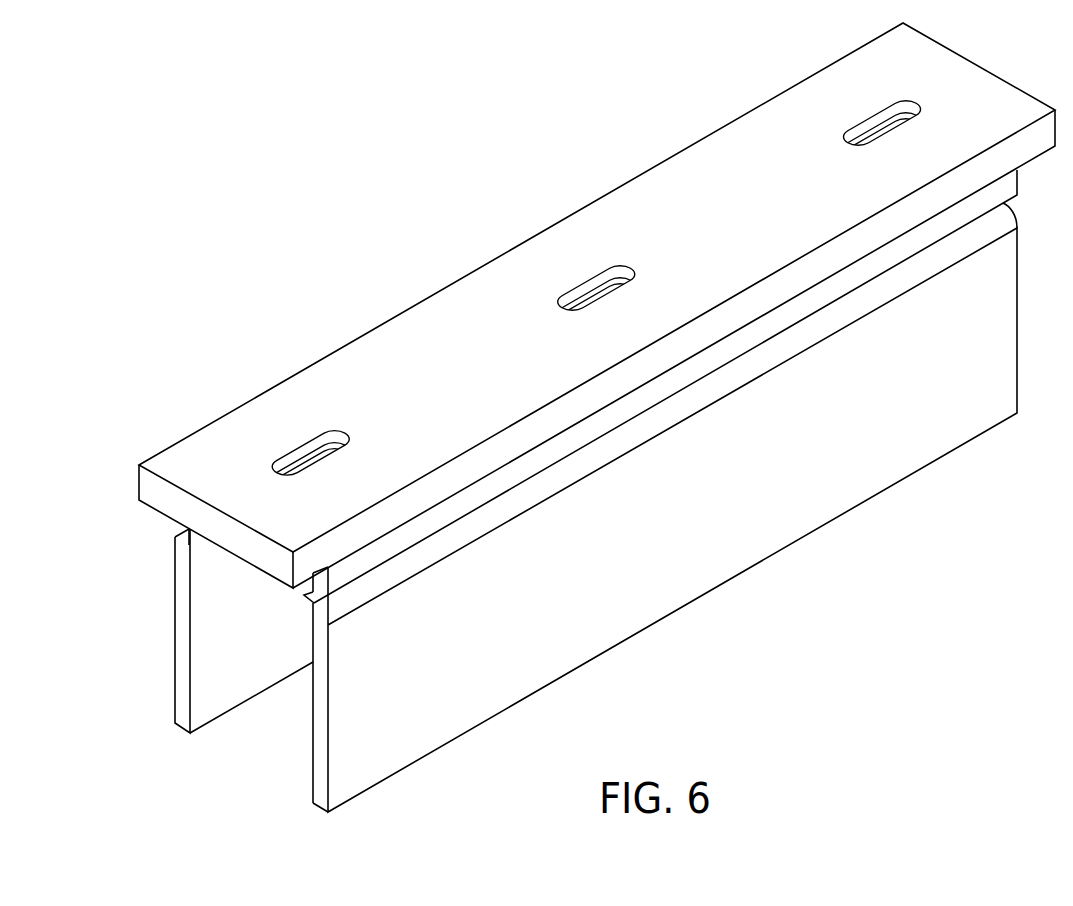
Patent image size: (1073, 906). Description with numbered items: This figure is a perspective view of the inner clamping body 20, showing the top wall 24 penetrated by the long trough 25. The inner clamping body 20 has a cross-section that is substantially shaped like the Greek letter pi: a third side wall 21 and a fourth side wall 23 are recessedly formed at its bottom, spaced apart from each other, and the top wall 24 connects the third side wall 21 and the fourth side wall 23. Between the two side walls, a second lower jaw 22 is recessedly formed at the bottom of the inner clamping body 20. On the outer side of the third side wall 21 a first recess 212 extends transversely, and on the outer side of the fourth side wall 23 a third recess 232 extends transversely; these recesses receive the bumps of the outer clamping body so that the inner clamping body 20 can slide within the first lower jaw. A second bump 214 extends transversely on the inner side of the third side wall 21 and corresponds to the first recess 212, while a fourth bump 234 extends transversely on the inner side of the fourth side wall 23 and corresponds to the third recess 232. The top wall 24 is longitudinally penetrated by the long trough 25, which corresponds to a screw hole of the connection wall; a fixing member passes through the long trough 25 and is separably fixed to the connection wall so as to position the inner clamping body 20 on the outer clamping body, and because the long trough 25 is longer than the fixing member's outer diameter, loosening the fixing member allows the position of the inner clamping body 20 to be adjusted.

The inner clamping body 20 is at (556, 172).
The third side wall 21 is at (658, 491).
The first recess 212 is at (468, 527).
The second bump 214 is at (304, 597).
The second lower jaw 22 is at (253, 742).
The fourth side wall 23 is at (142, 619).
The third recess 232 is at (180, 536).
The fourth bump 234 is at (205, 545).
The top wall 24 is at (180, 457).
The long trough 25 is at (328, 440).